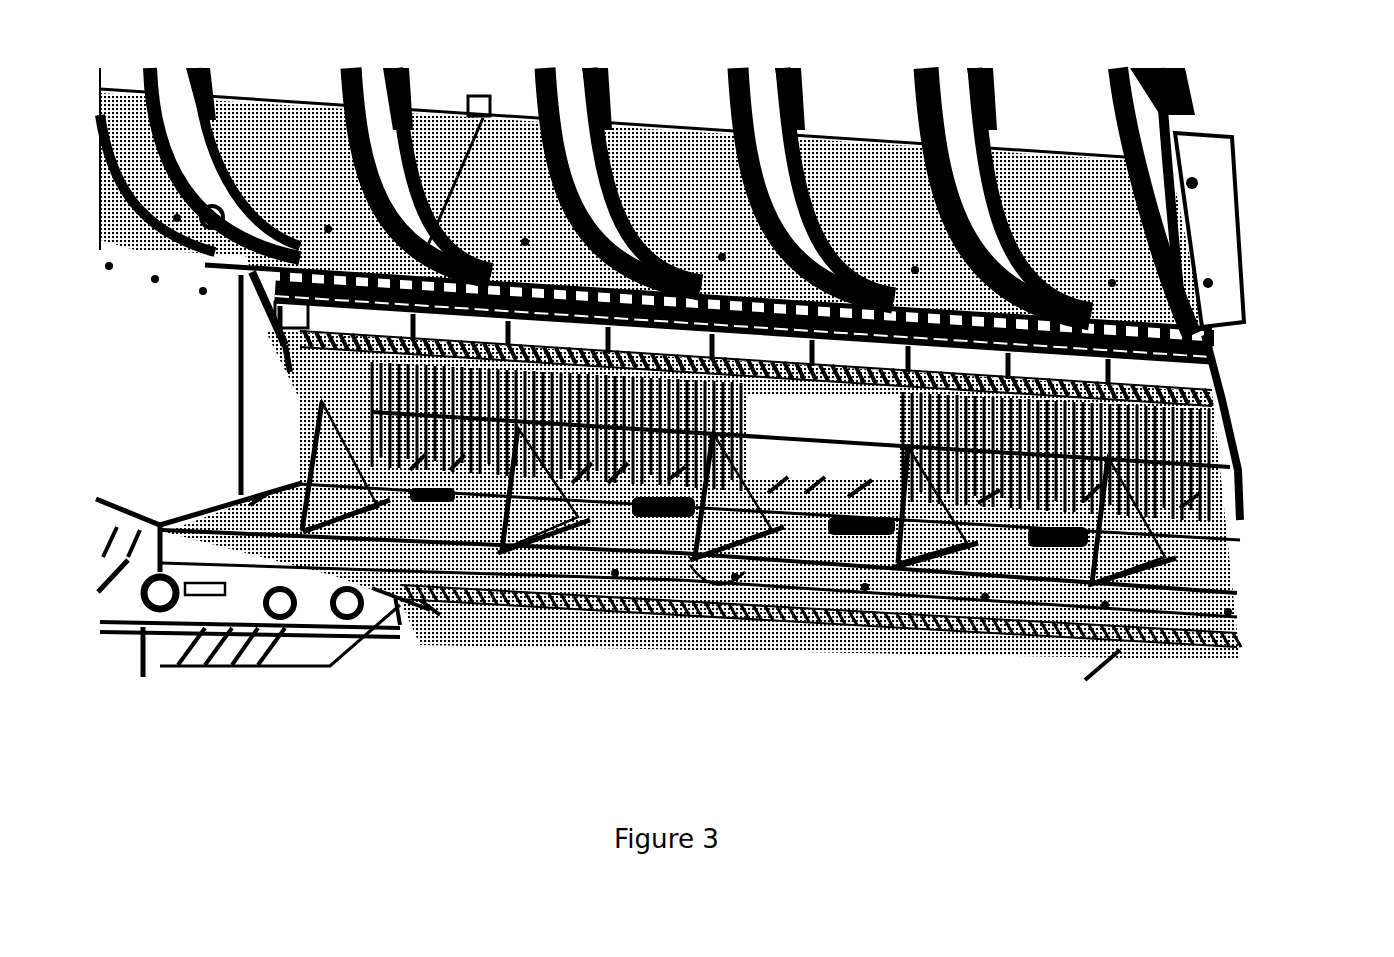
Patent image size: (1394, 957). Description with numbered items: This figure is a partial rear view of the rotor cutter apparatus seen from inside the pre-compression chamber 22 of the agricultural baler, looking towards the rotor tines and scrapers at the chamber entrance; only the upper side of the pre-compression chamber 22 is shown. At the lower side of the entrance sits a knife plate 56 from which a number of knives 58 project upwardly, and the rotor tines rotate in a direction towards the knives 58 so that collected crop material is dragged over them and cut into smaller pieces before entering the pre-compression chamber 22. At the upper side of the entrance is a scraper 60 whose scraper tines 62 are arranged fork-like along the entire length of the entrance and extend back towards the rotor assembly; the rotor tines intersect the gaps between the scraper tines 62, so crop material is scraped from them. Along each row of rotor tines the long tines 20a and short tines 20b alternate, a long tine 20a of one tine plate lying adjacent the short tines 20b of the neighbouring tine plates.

The pre-compression chamber 22 is at (1090, 226).
The scraper tines 62 is at (1212, 380).
The scraper 60 is at (1227, 393).
The long tine 20a is at (1223, 490).
The short tine 20b is at (1175, 563).
The knives 58 is at (912, 585).
The knife plate 56 is at (1040, 643).